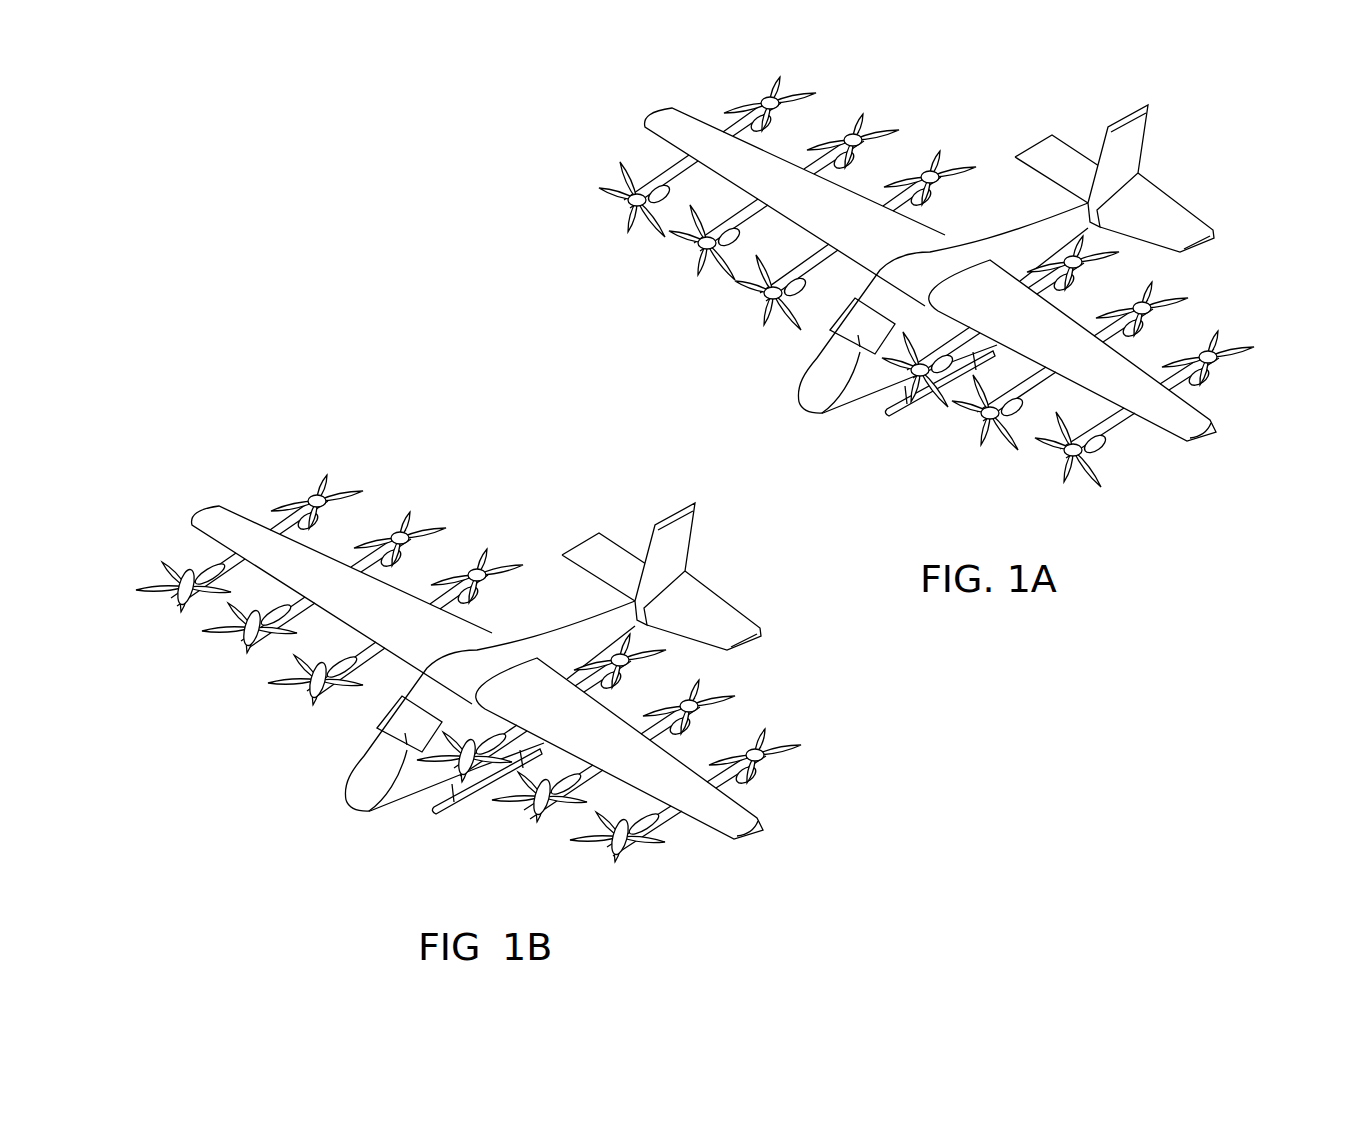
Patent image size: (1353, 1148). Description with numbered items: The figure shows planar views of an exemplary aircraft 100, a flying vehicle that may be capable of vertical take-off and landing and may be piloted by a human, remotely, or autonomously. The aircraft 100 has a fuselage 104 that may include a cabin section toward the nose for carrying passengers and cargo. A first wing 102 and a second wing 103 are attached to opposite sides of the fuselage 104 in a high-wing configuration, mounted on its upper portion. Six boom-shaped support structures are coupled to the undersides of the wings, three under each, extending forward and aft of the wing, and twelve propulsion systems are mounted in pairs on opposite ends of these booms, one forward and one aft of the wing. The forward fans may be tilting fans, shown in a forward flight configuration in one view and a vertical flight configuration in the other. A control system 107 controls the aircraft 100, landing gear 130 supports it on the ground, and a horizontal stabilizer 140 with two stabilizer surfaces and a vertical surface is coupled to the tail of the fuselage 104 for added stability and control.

In FIG. 1A, the aircraft 100 is at (1030, 74).
In FIG. 1B, the aircraft 100 is at (577, 472).
In FIG. 1A, the first wing 102 is at (647, 122).
In FIG. 1B, the first wing 102 is at (194, 520).
In FIG. 1A, the second wing 103 is at (1214, 434).
In FIG. 1B, the second wing 103 is at (761, 832).
In FIG. 1A, the fuselage 104 is at (806, 389).
In FIG. 1B, the fuselage 104 is at (353, 787).
In FIG. 1A, the control system 107 is at (820, 414).
In FIG. 1B, the control system 107 is at (361, 808).
In FIG. 1A, the landing gear 130 is at (887, 418).
In FIG. 1B, the landing gear 130 is at (433, 817).
In FIG. 1A, the horizontal stabilizer 140 is at (1187, 203).
In FIG. 1B, the horizontal stabilizer 140 is at (734, 601).